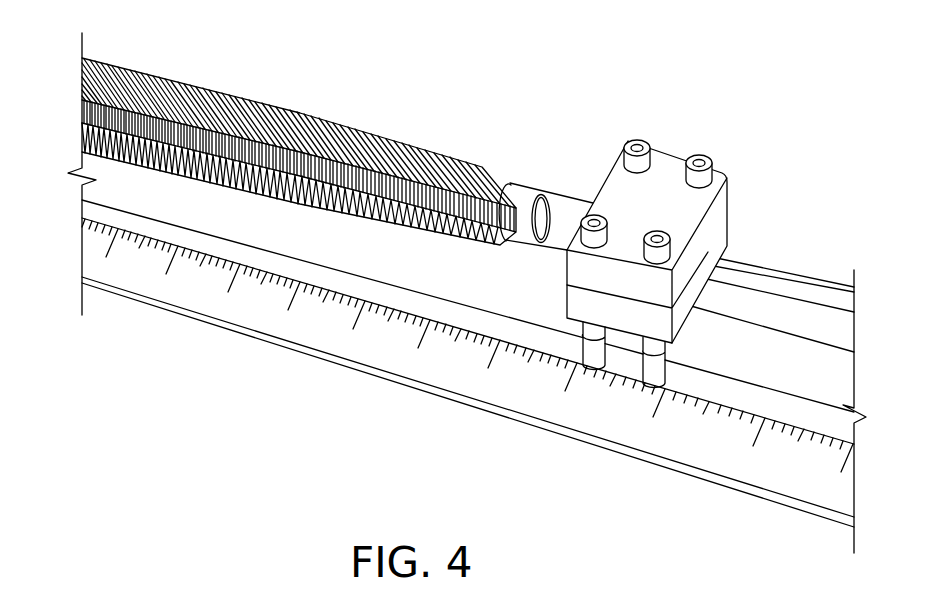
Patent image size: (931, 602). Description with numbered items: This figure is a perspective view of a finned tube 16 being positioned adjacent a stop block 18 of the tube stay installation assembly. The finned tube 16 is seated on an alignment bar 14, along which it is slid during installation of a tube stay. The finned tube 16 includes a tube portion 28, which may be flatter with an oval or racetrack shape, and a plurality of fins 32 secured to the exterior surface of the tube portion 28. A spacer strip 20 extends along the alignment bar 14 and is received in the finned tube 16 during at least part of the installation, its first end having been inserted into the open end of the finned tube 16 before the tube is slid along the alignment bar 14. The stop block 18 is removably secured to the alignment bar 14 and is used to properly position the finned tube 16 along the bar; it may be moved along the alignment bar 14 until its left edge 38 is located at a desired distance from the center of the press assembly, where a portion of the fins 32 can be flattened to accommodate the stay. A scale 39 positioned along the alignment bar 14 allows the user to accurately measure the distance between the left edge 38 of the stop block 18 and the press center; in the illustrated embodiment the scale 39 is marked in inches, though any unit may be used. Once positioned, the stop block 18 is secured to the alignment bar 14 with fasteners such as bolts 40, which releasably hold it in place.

The alignment bar 14 is at (402, 271).
The finned tube 16 is at (521, 224).
The stop block 18 is at (627, 248).
The spacer strip 20 is at (822, 292).
The tube portion 28 is at (82, 120).
The fins 32 is at (100, 93).
The left edge 38 is at (606, 196).
The scale 39 is at (840, 452).
The bolts 40 is at (664, 262).